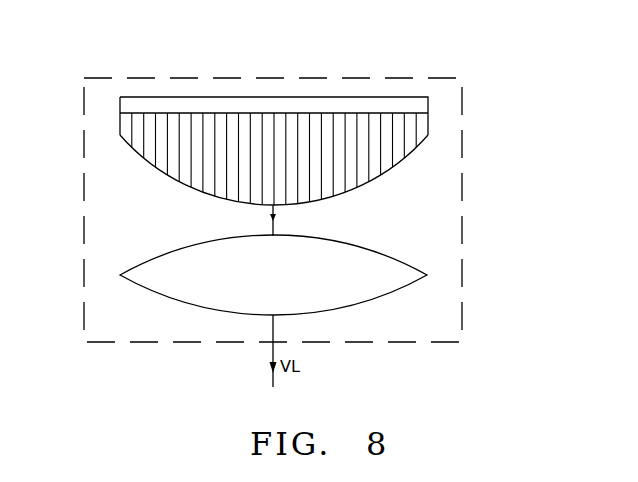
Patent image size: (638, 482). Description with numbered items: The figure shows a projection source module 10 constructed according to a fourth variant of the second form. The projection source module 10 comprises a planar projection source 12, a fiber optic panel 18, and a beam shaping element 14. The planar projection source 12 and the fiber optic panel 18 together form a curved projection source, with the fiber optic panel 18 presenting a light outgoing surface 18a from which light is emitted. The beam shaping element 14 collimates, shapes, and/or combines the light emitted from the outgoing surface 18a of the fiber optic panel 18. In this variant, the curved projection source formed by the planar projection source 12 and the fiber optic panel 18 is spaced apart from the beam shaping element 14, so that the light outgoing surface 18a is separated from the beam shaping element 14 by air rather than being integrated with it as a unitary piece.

The projection source module 10 is at (273, 180).
The planar projection source 12 is at (274, 203).
The beam shaping element 14 is at (273, 249).
The fiber optic panel 18 is at (274, 112).
The outgoing surface 18a is at (274, 261).